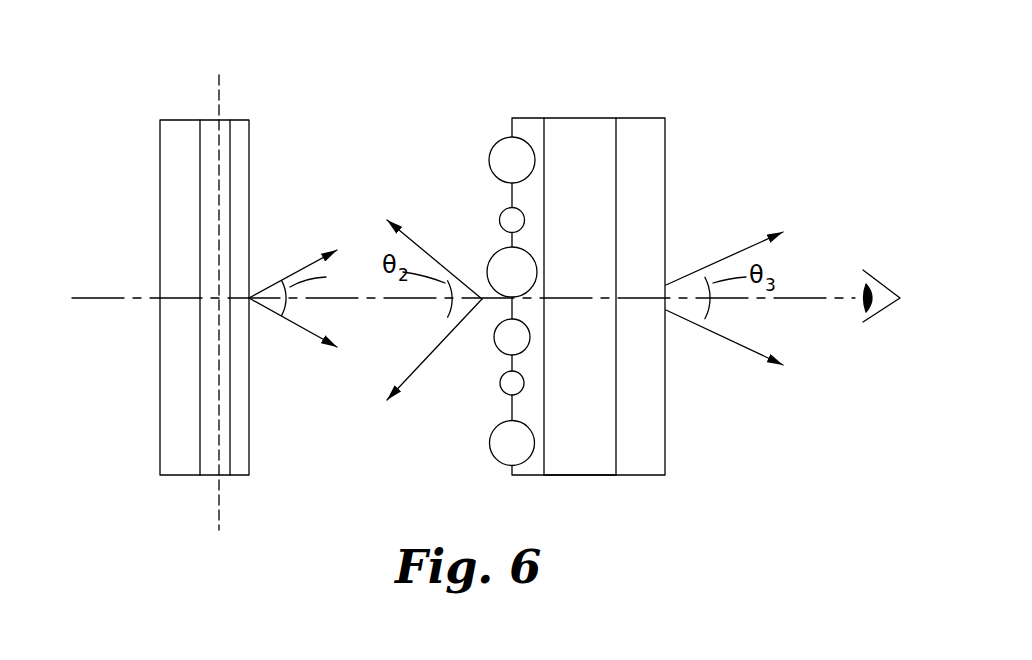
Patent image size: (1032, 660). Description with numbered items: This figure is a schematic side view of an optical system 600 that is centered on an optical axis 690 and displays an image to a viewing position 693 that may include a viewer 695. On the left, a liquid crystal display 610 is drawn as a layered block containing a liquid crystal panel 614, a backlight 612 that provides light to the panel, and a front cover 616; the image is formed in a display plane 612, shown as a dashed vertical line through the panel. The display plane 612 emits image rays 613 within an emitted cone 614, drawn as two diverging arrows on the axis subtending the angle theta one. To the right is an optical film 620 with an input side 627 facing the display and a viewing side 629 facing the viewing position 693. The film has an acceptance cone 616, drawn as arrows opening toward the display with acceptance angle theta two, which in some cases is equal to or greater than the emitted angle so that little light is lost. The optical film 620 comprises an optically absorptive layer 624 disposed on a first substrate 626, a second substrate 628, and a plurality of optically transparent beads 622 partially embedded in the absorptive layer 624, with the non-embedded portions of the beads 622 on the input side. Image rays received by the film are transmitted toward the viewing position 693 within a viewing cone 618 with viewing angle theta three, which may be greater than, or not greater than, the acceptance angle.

The optical system 600 is at (127, 103).
The liquid crystal display 610 is at (170, 118).
The display plane 612 is at (220, 75).
The image rays 613 is at (302, 328).
The emitted cone 614 is at (305, 266).
The acceptance cone 616 is at (237, 468).
The viewing cone 618 is at (745, 347).
The optical film 620 is at (576, 127).
The optically transparent beads 622 is at (499, 449).
The optically absorptive layer 624 is at (526, 127).
The first substrate 626 is at (588, 465).
The input side 627 is at (465, 150).
The second substrate 628 is at (642, 127).
The viewing side 629 is at (666, 142).
The optical axis 690 is at (90, 297).
The viewing position 693 is at (832, 205).
The viewer 695 is at (880, 290).